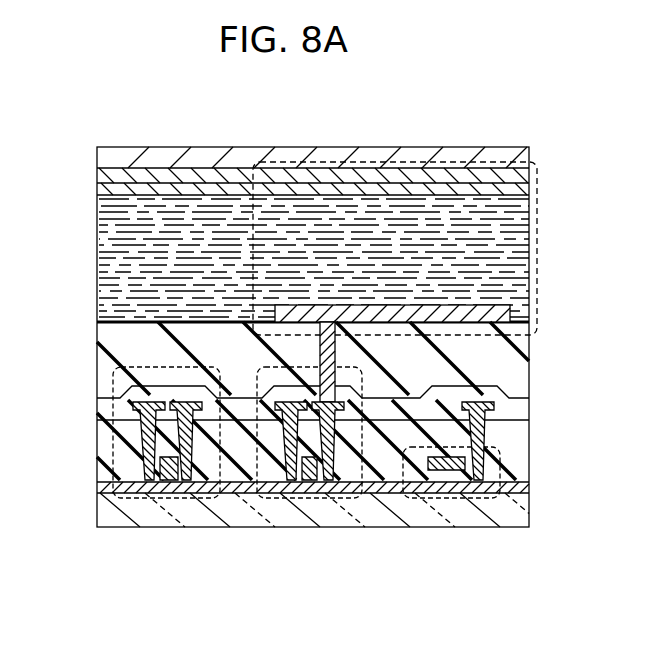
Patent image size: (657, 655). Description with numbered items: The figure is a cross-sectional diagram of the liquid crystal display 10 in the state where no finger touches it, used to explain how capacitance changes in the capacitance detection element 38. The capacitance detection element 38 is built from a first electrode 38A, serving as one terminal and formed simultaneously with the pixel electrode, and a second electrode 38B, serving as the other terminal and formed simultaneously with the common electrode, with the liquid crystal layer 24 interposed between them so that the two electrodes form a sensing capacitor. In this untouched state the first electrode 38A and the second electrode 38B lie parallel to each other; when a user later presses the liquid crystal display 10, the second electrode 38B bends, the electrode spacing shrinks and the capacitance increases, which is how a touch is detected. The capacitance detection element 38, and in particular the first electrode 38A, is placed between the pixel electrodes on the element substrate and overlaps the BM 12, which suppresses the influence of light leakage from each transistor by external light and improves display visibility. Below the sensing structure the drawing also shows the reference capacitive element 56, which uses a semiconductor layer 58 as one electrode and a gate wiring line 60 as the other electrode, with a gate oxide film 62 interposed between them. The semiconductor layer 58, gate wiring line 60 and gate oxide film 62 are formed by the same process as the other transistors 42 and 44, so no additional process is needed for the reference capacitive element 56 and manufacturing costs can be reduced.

The liquid crystal display 10 is at (483, 114).
The BM 12 is at (524, 170).
The liquid crystal layer 24 is at (97, 238).
The capacitance detection element 38 is at (540, 245).
The first electrode 38A is at (512, 316).
The second electrode 38B is at (524, 190).
The transistor 42 is at (170, 498).
The transistor 44 is at (252, 498).
The reference capacitive element 56 is at (500, 460).
The semiconductor layer 58 is at (481, 487).
The gate wiring line 60 is at (430, 498).
The gate oxide film 62 is at (520, 490).